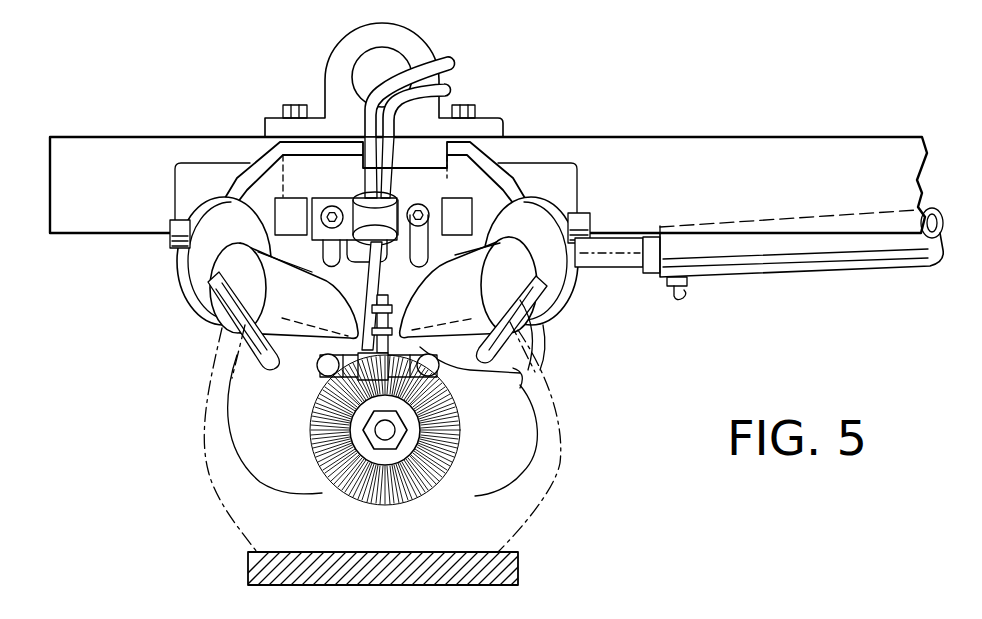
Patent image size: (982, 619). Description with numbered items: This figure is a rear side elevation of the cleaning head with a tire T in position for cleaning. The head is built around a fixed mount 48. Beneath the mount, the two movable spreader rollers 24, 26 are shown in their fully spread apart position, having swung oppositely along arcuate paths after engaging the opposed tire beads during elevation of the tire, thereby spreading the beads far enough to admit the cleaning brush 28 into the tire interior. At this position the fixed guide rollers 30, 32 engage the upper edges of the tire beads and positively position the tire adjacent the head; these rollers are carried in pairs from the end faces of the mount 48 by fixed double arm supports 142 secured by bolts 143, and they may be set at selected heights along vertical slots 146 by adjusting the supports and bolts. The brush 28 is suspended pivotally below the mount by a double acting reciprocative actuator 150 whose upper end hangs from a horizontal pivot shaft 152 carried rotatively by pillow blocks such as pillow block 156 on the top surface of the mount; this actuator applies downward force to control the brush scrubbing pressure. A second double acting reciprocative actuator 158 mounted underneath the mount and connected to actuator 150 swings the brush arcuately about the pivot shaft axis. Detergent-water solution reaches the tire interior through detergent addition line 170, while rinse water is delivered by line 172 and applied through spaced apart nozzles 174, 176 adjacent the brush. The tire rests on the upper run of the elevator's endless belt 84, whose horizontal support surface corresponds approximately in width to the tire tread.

The mount 48 is at (118, 158).
The pillow block 156 is at (348, 43).
The horizontal pivot shaft 152 is at (357, 72).
The rinse water line 172 is at (440, 55).
The detergent addition line 170 is at (443, 90).
The fixed double arm support 142 is at (490, 193).
The bolt 143 is at (400, 208).
The vertical slot 146 is at (376, 250).
The guide roller 30 is at (320, 312).
The guide roller 32 is at (462, 312).
The spreader roller 24 is at (257, 342).
The spreader roller 26 is at (492, 338).
The double acting reciprocative actuator 158 is at (757, 262).
The double acting reciprocative actuator 150 is at (520, 373).
The nozzle 174 is at (320, 366).
The nozzle 176 is at (440, 368).
The cleaning brush 28 is at (228, 378).
The tire T is at (540, 478).
The endless belt 84 is at (519, 576).